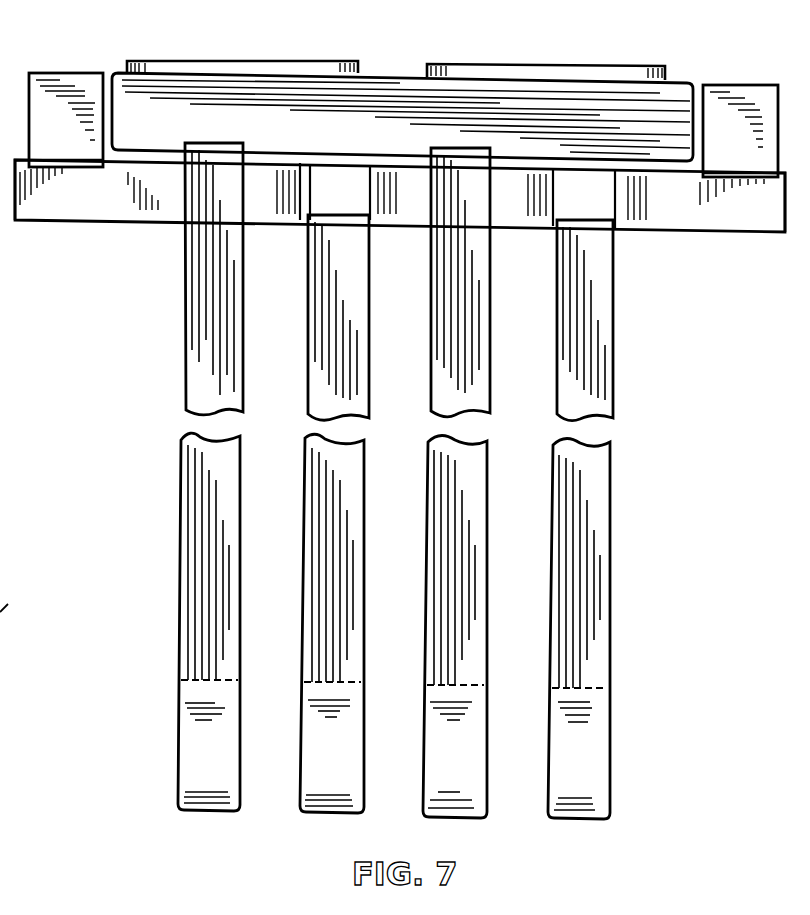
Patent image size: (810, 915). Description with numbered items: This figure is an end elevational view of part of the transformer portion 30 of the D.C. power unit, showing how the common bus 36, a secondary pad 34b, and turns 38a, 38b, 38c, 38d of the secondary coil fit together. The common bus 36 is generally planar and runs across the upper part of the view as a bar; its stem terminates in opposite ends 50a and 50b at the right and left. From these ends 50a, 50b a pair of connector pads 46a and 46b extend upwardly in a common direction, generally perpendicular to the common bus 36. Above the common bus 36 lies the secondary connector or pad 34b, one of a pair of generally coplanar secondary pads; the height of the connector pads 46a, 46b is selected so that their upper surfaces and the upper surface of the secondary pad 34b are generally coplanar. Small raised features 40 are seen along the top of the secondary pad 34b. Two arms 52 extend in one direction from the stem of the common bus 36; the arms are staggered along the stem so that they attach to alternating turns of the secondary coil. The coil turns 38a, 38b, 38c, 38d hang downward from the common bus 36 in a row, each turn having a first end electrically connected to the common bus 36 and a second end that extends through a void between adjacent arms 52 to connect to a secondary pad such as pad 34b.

The transformer portion 30 is at (146, 780).
The secondary connector or pad 34b is at (371, 92).
The common bus 36 is at (680, 232).
The secondary coil turn 38a is at (180, 600).
The secondary coil turn 38b is at (306, 612).
The secondary coil turn 38c is at (427, 612).
The secondary coil turn 38d is at (555, 605).
The mounting tab 40 is at (252, 62).
The connector pad 46a is at (752, 103).
The connector pad 46b is at (54, 88).
The end of stem portion 50a is at (787, 208).
The end of stem portion 50b is at (13, 186).
The arm 52 is at (370, 222).